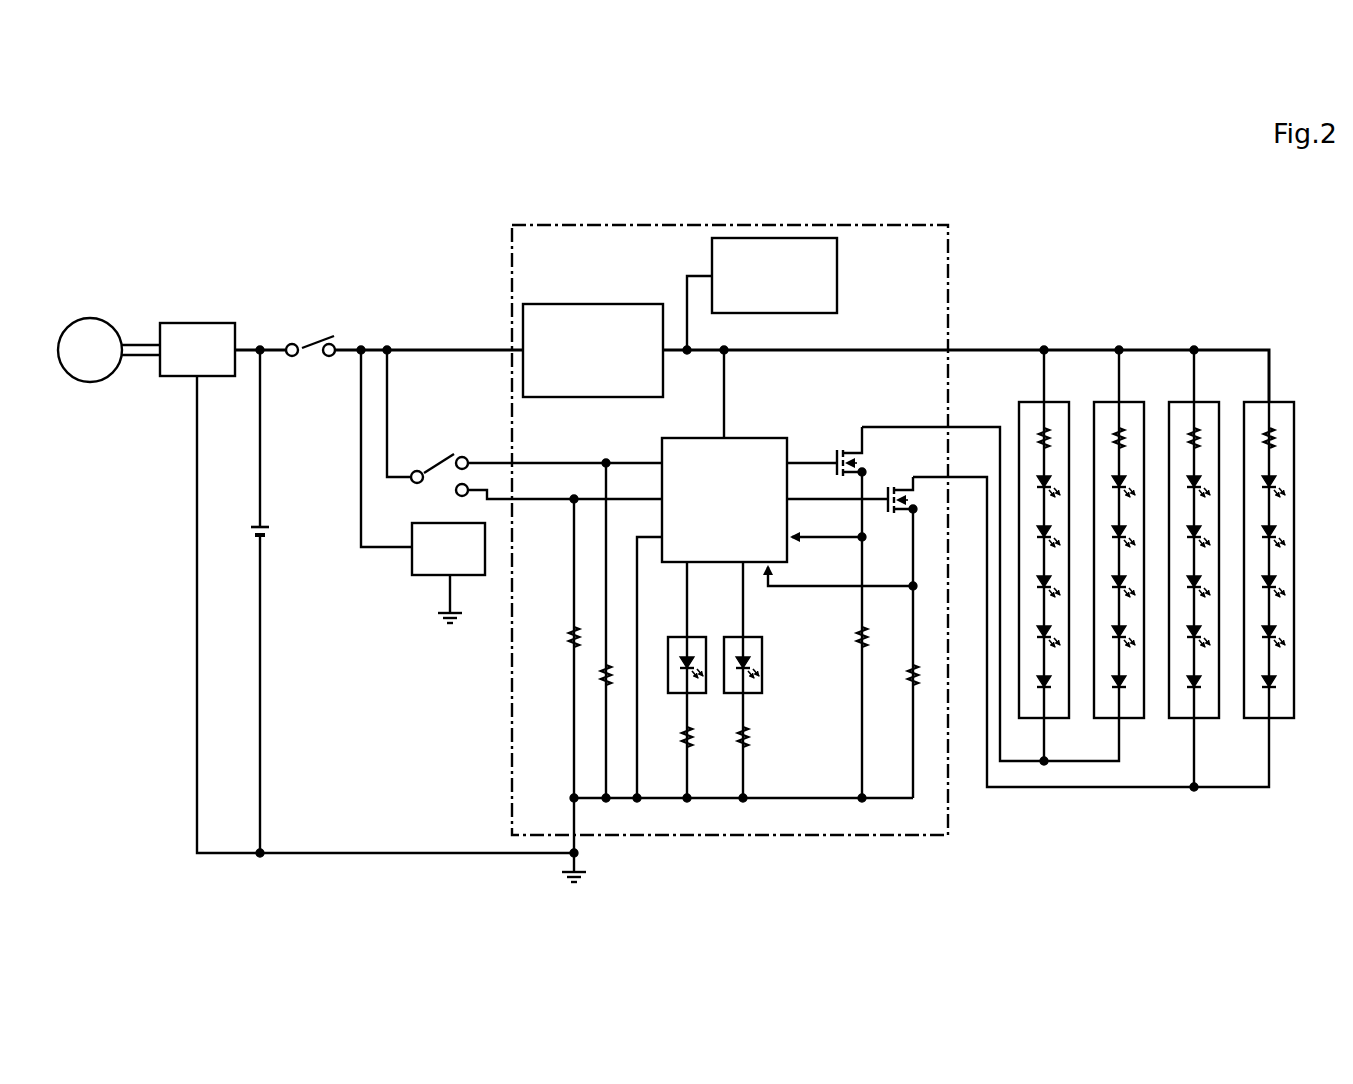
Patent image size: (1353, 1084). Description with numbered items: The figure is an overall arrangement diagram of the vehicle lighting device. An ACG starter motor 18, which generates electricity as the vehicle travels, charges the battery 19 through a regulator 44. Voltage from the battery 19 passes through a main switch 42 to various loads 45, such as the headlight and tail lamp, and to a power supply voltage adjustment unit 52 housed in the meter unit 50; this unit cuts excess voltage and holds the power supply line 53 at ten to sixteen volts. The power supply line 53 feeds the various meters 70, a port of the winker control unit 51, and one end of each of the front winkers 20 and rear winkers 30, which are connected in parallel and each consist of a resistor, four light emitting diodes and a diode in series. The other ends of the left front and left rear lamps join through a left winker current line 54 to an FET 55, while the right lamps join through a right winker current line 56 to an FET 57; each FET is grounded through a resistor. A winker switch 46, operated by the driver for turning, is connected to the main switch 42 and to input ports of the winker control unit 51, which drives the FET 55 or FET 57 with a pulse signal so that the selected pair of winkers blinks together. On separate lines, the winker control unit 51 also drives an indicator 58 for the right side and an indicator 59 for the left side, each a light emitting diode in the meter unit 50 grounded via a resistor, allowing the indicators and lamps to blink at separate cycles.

The ACG starter motor 18 is at (90, 381).
The regulator 44 is at (220, 377).
The main switch 42 is at (310, 340).
The battery 19 is at (273, 527).
The loads 45 is at (423, 577).
The winker switch 46 is at (437, 463).
The meter unit 50 is at (845, 225).
The power supply voltage adjustment unit 52 is at (620, 303).
The various meters 70 is at (838, 280).
The power supply line 53 is at (860, 348).
The winker control unit 51 is at (757, 437).
The FET 55 is at (838, 442).
The FET 57 is at (890, 481).
The left winker current line 54 is at (968, 423).
The right winker current line 56 is at (967, 477).
The indicator 59 is at (700, 633).
The indicator 58 is at (757, 633).
The front winkers 20 is at (1180, 402).
The rear winkers 30 is at (1259, 402).